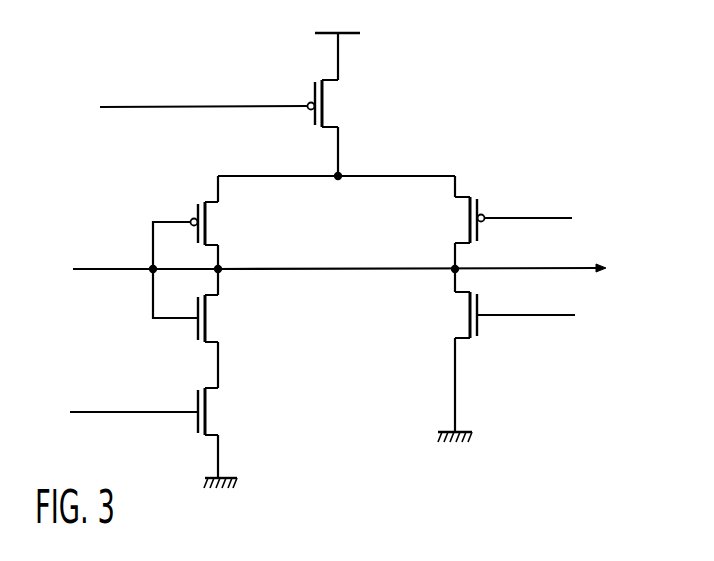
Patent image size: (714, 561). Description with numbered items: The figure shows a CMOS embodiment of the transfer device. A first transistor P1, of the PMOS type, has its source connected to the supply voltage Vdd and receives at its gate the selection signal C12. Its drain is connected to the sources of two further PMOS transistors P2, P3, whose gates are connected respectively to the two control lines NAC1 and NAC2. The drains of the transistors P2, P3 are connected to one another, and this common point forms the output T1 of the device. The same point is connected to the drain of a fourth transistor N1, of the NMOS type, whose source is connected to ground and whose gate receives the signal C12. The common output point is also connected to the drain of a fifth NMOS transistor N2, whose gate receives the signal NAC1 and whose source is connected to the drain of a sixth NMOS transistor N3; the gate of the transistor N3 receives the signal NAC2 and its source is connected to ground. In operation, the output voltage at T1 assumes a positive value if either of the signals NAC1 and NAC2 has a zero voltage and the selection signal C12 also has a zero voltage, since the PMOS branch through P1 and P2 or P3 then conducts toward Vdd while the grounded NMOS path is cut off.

The first transistor P1 is at (328, 127).
The PMOS transistor P2 is at (212, 246).
The PMOS transistor P3 is at (465, 242).
The fourth transistor N1 is at (465, 338).
The fifth NMOS transistor N2 is at (212, 342).
The sixth NMOS transistor N3 is at (212, 435).
The selection signal C12 is at (179, 106).
The control line NAC1 is at (131, 269).
The control line NAC2 is at (141, 411).
The output T1 is at (430, 265).
The supply voltage Vdd is at (337, 43).